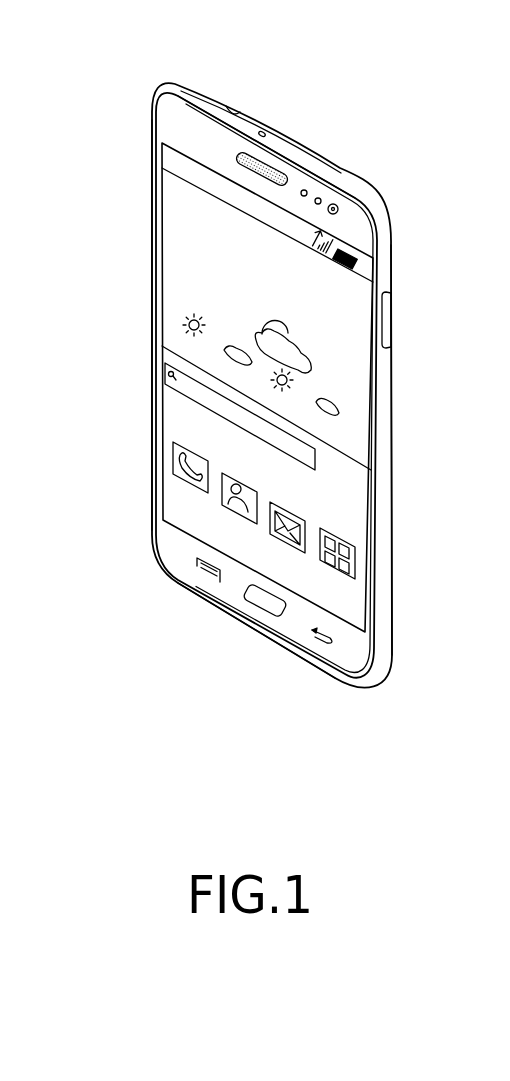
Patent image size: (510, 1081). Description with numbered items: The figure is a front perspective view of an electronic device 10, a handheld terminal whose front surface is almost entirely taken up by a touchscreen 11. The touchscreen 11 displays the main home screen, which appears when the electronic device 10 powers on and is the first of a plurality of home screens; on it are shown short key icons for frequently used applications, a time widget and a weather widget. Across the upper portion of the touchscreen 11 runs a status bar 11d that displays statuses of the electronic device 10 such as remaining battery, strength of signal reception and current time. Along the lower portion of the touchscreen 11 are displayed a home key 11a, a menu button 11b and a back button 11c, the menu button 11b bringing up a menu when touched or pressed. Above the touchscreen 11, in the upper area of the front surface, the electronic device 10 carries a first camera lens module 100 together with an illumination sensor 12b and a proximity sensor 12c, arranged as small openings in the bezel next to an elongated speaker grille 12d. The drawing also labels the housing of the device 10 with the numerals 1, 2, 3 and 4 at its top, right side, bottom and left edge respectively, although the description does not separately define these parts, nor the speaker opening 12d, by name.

The electronic device 10 is at (124, 57).
The housing 1 is at (248, 125).
The side case 2 is at (390, 426).
The bottom portion of housing 3 is at (208, 606).
The front case edge 4 is at (153, 328).
The first camera lens module 100 is at (333, 172).
The touchscreen 11 is at (167, 287).
The home key 11a is at (268, 600).
The menu button 11b is at (195, 560).
The back button 11c is at (323, 640).
The status bar 11d is at (167, 159).
The illumination sensor 12b is at (318, 197).
The proximity sensor 12c is at (303, 189).
The speaker 12d is at (237, 153).